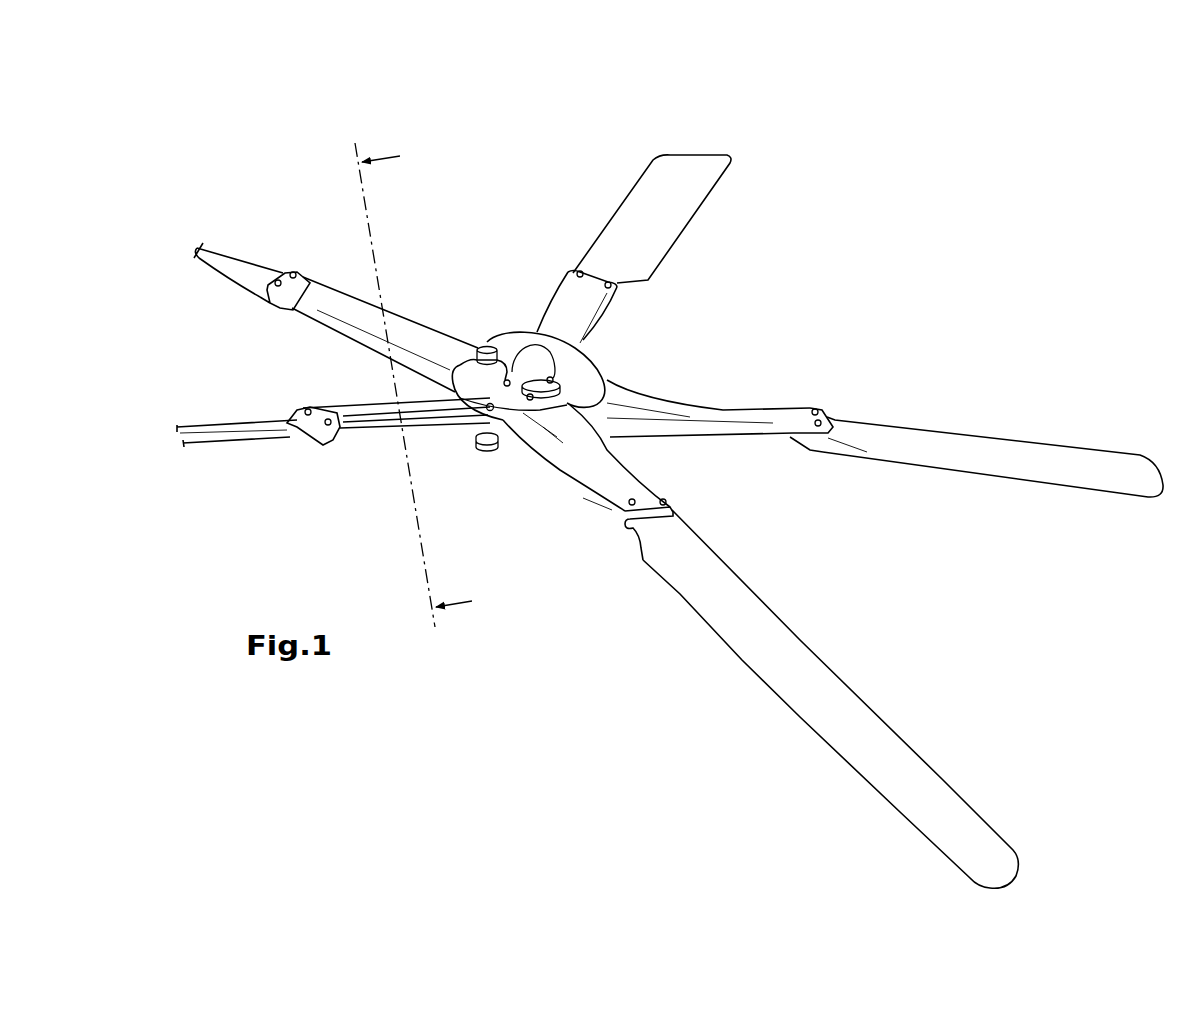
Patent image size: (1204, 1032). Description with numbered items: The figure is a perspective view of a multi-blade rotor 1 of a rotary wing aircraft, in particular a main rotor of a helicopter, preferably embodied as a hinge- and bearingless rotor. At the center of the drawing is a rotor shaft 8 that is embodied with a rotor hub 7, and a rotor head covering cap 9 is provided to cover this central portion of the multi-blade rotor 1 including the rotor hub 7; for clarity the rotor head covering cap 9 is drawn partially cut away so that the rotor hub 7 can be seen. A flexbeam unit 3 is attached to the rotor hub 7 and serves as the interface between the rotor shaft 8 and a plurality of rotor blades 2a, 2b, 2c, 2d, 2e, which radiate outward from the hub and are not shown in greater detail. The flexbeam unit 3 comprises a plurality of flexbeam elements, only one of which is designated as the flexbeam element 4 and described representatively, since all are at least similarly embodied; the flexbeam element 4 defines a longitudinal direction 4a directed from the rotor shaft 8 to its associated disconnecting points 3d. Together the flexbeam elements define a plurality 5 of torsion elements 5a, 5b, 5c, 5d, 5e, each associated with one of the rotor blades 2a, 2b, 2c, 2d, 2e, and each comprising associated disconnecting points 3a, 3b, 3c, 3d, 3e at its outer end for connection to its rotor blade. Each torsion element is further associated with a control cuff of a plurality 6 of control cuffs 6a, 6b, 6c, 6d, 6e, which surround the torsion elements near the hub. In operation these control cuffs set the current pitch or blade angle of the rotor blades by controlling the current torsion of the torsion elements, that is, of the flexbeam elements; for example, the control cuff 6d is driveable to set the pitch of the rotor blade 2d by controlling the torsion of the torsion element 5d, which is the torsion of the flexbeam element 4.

The multi-blade rotor 1 is at (478, 242).
The rotor blade 2a is at (693, 172).
The rotor blade 2b is at (1125, 463).
The rotor blade 2c is at (972, 833).
The rotor blade 2d is at (218, 428).
The rotor blade 2e is at (233, 258).
The flexbeam unit 3 is at (504, 430).
The disconnecting points 3a is at (607, 276).
The disconnecting points 3b is at (838, 423).
The disconnecting points 3c is at (655, 514).
The disconnecting points 3d is at (279, 436).
The disconnecting points 3e is at (313, 300).
The flexbeam element 4 is at (379, 440).
The longitudinal direction 4a is at (346, 418).
The plurality of torsion elements 5 is at (800, 385).
The torsion element 5a is at (598, 346).
The torsion element 5b is at (733, 437).
The torsion element 5c is at (592, 488).
The torsion element 5d is at (332, 410).
The torsion element 5e is at (354, 306).
The plurality of control cuffs 6 is at (600, 325).
The control cuff 6a is at (575, 313).
The control cuff 6b is at (697, 407).
The control cuff 6c is at (635, 460).
The control cuff 6d is at (440, 442).
The control cuff 6e is at (418, 338).
The rotor hub 7 is at (490, 336).
The rotor shaft 8 is at (531, 382).
The rotor head covering cap 9 is at (607, 377).